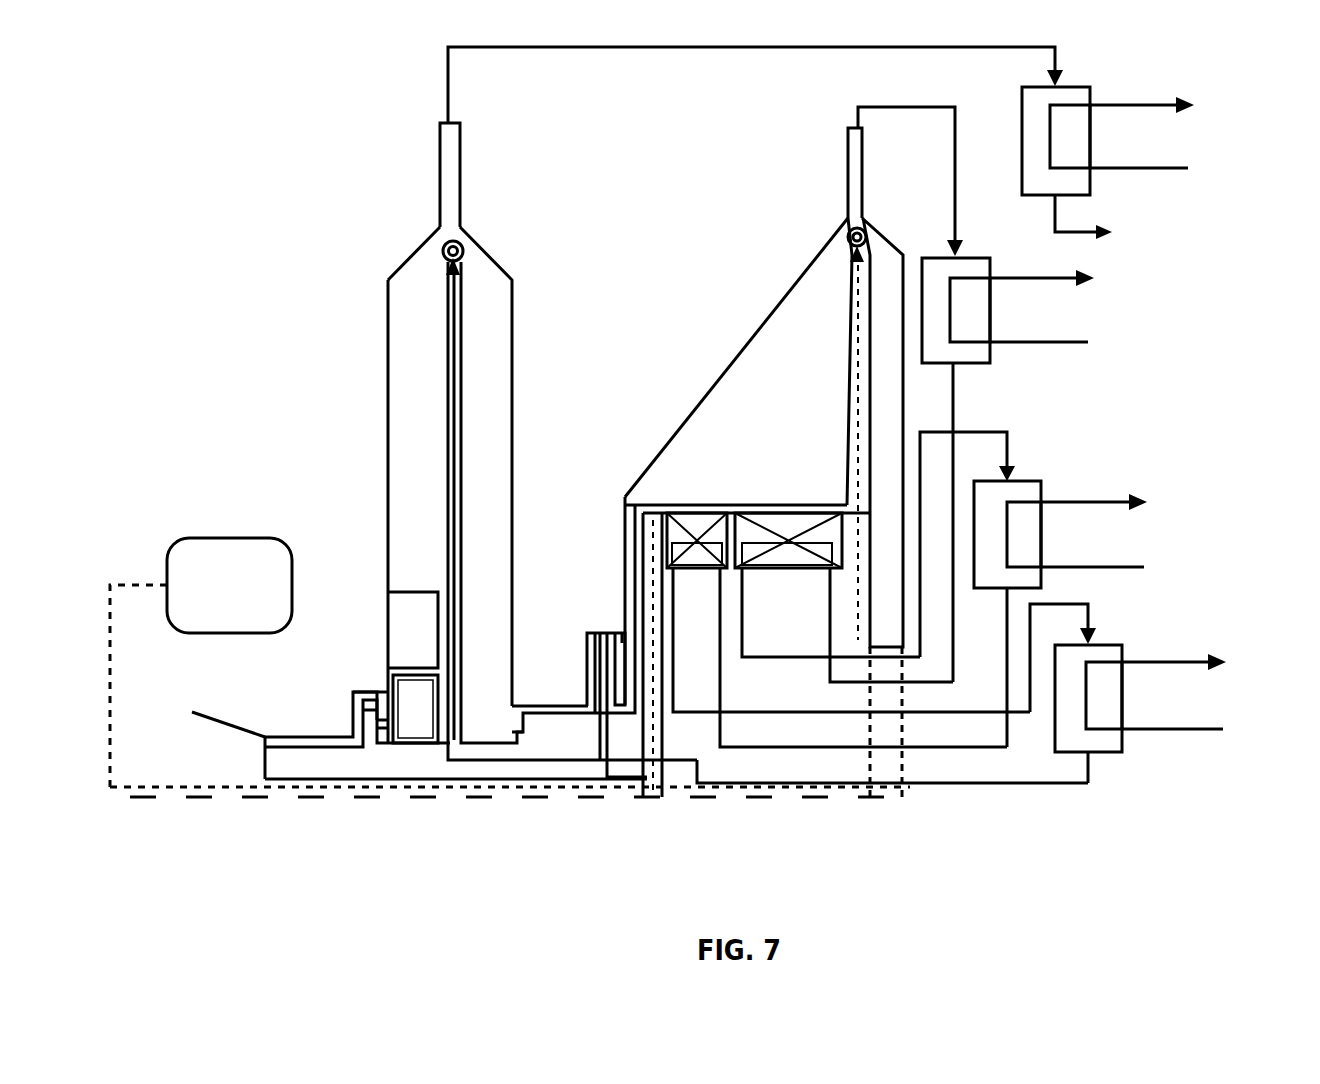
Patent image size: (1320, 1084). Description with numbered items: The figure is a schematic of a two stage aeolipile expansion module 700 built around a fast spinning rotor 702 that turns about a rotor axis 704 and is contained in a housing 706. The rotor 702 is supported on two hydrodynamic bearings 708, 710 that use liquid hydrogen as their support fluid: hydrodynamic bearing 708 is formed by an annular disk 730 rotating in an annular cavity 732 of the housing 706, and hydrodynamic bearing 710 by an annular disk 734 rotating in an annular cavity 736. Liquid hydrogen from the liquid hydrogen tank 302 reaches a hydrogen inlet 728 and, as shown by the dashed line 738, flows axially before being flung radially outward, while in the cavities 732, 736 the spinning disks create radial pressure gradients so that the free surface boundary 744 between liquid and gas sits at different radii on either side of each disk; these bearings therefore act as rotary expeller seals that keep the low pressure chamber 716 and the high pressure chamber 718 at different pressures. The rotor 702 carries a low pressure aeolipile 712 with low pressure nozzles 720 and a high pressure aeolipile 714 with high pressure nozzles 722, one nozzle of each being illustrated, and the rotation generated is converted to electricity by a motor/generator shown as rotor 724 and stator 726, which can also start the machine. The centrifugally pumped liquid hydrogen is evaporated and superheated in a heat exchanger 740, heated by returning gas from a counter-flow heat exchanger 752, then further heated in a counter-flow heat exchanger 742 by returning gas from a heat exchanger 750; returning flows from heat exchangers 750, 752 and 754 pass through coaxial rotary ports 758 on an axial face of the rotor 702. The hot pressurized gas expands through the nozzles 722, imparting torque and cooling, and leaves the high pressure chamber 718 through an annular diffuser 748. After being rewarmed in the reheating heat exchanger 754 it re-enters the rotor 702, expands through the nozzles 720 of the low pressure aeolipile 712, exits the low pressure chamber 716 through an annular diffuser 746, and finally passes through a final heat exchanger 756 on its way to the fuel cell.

The two stage aeolipile expansion module 700 is at (1203, 235).
The rotor 702 is at (281, 782).
The rotor axis 704 is at (205, 800).
The housing 706 is at (398, 267).
The hydrodynamic bearing 708 is at (340, 668).
The hydrodynamic bearing 710 is at (607, 606).
The low pressure aeolipile 712 is at (409, 485).
The high pressure aeolipile 714 is at (820, 356).
The low pressure chamber 716 is at (417, 312).
The high pressure chamber 718 is at (797, 327).
The low pressure nozzle 720 is at (443, 236).
The high pressure nozzle 722 is at (848, 238).
The rotor 724 is at (415, 714).
The stator 726 is at (411, 591).
The hydrogen inlet 728 is at (212, 740).
The annular disk 730 is at (368, 708).
The annular cavity 732 is at (382, 694).
The annular disk 734 is at (598, 745).
The annular cavity 736 is at (588, 632).
The dashed line 738 is at (110, 677).
The heat exchanger 740 is at (705, 512).
The counter-flow heat exchanger 742 is at (797, 524).
The free surface boundary 744 is at (373, 744).
The annular diffuser 746 is at (440, 152).
The annular diffuser 748 is at (848, 140).
The heat exchanger 750 is at (973, 365).
The counter-flow heat exchanger 752 is at (1042, 487).
The reheating heat exchanger 754 is at (1097, 753).
The final heat exchanger 756 is at (1093, 130).
The coaxial rotary port 758 is at (846, 772).
The liquid hydrogen tank 302 is at (215, 538).